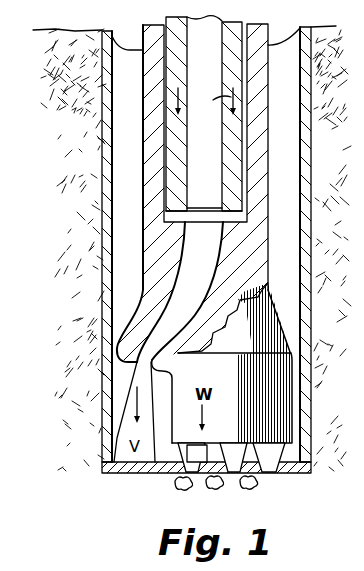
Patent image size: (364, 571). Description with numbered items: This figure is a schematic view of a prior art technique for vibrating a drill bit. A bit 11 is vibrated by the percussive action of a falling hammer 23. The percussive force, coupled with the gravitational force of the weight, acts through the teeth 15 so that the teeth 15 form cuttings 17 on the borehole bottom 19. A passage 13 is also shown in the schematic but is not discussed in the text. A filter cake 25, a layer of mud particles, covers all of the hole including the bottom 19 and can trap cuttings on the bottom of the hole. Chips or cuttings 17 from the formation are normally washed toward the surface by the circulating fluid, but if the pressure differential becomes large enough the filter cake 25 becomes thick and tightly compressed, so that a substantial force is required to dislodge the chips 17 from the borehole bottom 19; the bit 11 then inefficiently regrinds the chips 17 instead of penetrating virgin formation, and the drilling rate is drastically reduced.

The bit 11 is at (271, 304).
The fluid flow passage 13 is at (211, 261).
The teeth 15 is at (181, 447).
The cuttings 17 is at (245, 486).
The borehole bottom 19 is at (133, 475).
The falling hammer 23 is at (233, 17).
The filter cake 25 is at (102, 277).